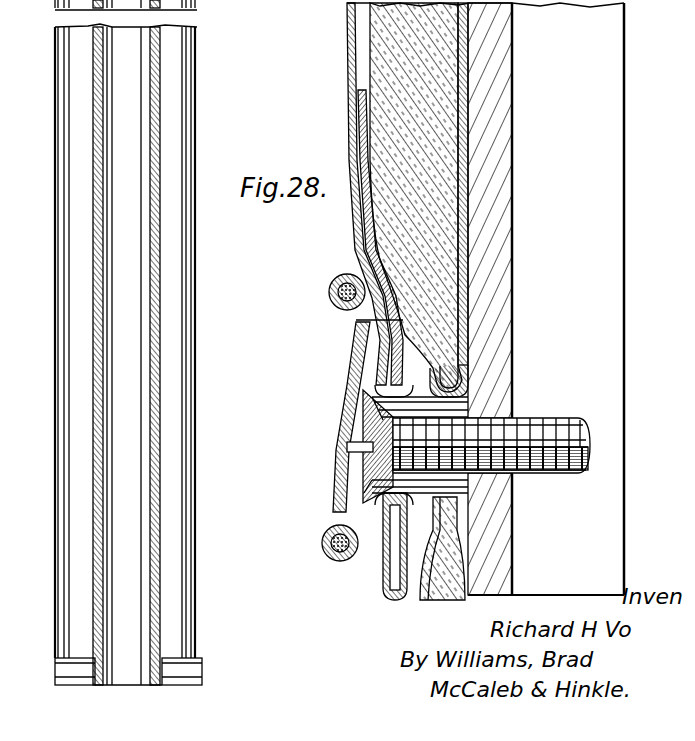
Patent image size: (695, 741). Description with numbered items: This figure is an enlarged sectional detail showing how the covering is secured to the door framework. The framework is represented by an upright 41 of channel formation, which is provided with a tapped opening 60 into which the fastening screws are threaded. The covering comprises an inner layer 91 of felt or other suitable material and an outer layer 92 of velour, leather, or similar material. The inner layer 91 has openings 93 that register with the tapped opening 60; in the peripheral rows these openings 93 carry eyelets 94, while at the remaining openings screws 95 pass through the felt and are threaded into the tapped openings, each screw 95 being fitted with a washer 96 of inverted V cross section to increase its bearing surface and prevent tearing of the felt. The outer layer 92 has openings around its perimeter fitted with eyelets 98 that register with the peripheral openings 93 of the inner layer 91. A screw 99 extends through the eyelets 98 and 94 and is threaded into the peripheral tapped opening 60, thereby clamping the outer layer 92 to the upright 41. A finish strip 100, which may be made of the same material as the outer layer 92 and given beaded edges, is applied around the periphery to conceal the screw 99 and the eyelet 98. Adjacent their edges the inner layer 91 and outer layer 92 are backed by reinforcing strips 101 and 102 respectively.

The upright 41 is at (600, 286).
The tapped opening 60 is at (513, 407).
The inner layer 91 is at (158, 200).
The outer layer 92 is at (158, 102).
The opening 93 is at (467, 372).
The eyelet 94 is at (152, 683).
The screw 95 is at (160, 465).
The washer 96 is at (97, 466).
The eyelet 98 is at (373, 513).
The screw 99 is at (413, 437).
The finish strip 100 is at (345, 358).
The reinforcing strip 101 is at (462, 178).
The reinforcing strip 102 is at (355, 208).